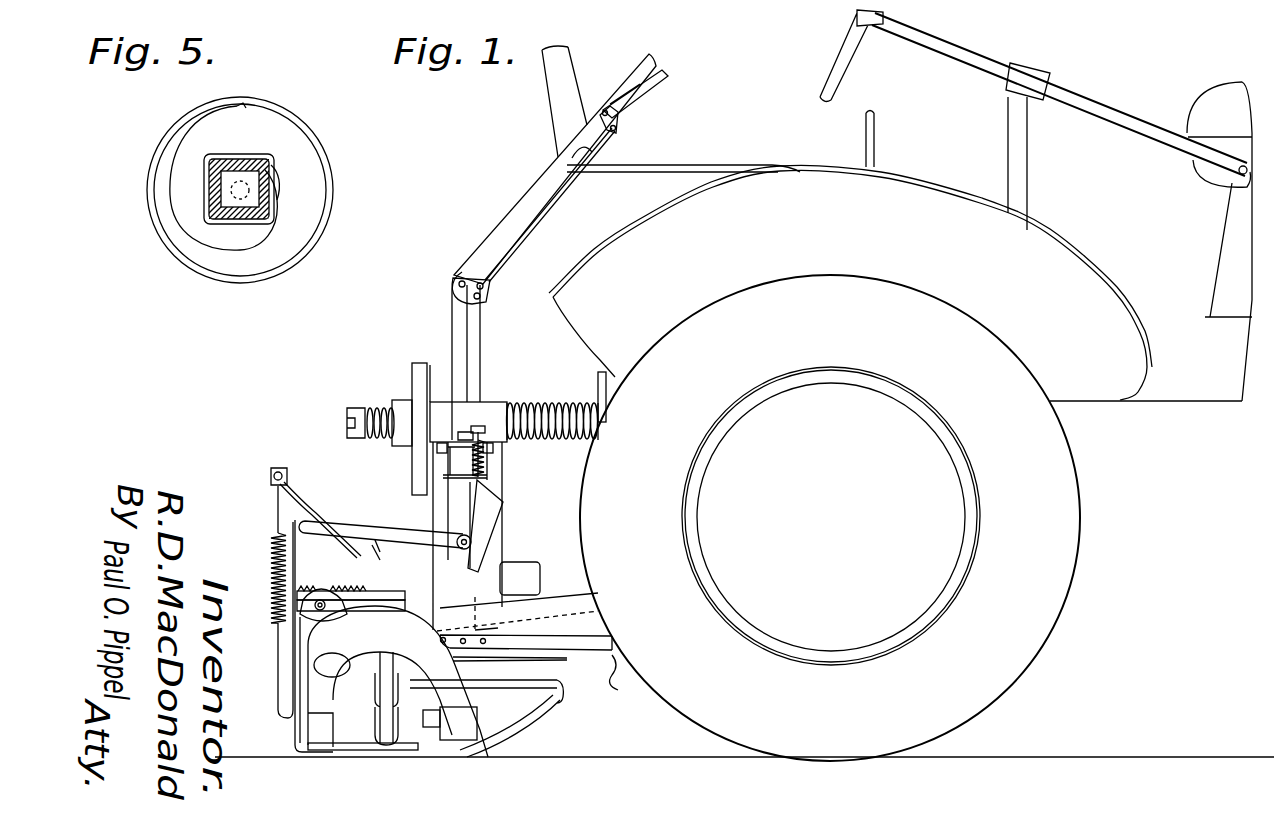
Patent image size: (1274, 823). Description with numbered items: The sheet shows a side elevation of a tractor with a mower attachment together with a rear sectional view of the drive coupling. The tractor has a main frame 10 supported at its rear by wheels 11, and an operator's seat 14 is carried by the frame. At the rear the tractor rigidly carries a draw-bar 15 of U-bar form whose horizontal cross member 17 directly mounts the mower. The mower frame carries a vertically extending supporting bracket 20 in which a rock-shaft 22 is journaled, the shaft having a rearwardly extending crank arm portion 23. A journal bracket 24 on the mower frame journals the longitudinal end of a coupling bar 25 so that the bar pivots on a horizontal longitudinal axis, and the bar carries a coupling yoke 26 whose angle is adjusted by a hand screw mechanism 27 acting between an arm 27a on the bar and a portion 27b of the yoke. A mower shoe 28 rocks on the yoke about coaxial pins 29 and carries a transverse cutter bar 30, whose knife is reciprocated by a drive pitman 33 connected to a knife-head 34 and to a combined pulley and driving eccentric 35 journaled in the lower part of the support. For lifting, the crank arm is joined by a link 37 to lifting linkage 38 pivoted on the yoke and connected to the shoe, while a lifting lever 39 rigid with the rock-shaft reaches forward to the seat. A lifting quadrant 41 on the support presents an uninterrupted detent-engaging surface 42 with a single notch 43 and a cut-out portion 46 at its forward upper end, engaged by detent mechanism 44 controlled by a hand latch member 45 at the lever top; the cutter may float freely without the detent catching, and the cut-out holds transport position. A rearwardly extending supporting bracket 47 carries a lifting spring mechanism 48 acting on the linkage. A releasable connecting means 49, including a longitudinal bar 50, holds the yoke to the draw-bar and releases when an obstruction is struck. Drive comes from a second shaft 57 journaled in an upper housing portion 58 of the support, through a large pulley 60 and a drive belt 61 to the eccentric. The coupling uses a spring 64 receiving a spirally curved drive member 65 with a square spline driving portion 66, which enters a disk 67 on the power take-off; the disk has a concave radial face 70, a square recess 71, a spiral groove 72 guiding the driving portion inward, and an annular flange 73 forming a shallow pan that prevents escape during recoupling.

In FIG. 1, the main frame 10 is at (1203, 390).
In FIG. 1, the wheels 11 is at (1050, 490).
In FIG. 1, the operator's seat 14 is at (672, 160).
In FIG. 1, the draw-bar 15 is at (563, 597).
In FIG. 1, the cross member 17 is at (473, 605).
In FIG. 1, the supporting bracket 20 is at (477, 570).
In FIG. 1, the rock-shaft 22 is at (473, 545).
In FIG. 1, the crank arm portion 23 is at (372, 545).
In FIG. 1, the journal bracket 24 is at (573, 610).
In FIG. 1, the coupling bar 25 is at (375, 540).
In FIG. 1, the coupling yoke 26 is at (278, 632).
In FIG. 1, the hand screw mechanism 27 is at (321, 585).
In FIG. 1, the arm 27a is at (345, 586).
In FIG. 1, the portion of the coupling yoke 27b is at (297, 600).
In FIG. 1, the mower shoe 28 is at (543, 717).
In FIG. 1, the coaxial pins 29 is at (477, 720).
In FIG. 1, the cutter bar 30 is at (300, 742).
In FIG. 1, the drive pitman 33 is at (352, 662).
In FIG. 1, the knife-head 34 is at (375, 745).
In FIG. 1, the combined pulley and driving eccentric 35 is at (408, 560).
In FIG. 1, the link 37 is at (283, 530).
In FIG. 1, the lifting linkage 38 is at (310, 657).
In FIG. 1, the lifting lever 39 is at (542, 183).
In FIG. 1, the lifting quadrant 41 is at (488, 522).
In FIG. 1, the detent-engaging surface 42 is at (478, 478).
In FIG. 1, the notch 43 is at (490, 488).
In FIG. 1, the detent mechanism 44 is at (487, 320).
In FIG. 1, the hand latch member 45 is at (668, 75).
In FIG. 1, the cut-out portion 46 is at (497, 500).
In FIG. 1, the supporting bracket 47 is at (270, 487).
In FIG. 1, the lifting spring mechanism 48 is at (270, 550).
In FIG. 1, the releasable connecting means 49 is at (618, 690).
In FIG. 1, the bar 50 is at (562, 660).
In FIG. 1, the second shaft 57 is at (520, 410).
In FIG. 1, the upper housing portion 58 is at (490, 405).
In FIG. 1, the large pulley 60 is at (412, 383).
In FIG. 1, the drive belt 61 is at (412, 363).
In FIG. 1, the spring 64 is at (576, 402).
In FIG. 5, the drive member 65 is at (269, 153).
In FIG. 5, the spline driving portion 66 is at (273, 168).
In FIG. 5, the disk 67 is at (337, 180).
In FIG. 1, the disk 67 is at (606, 386).
In FIG. 5, the concave radial face 70 is at (270, 123).
In FIG. 5, the recess 71 is at (207, 210).
In FIG. 5, the spiral groove 72 is at (168, 193).
In FIG. 5, the annular flange 73 is at (327, 210).